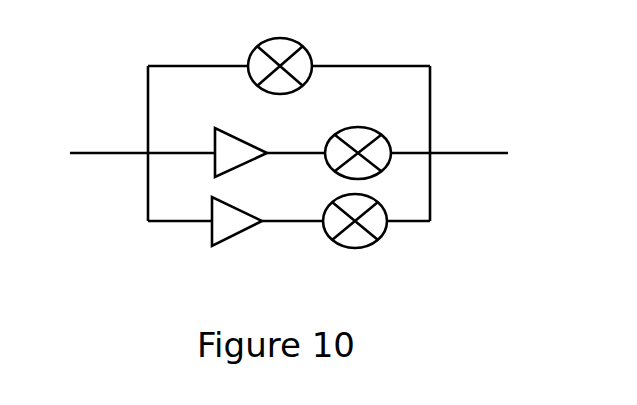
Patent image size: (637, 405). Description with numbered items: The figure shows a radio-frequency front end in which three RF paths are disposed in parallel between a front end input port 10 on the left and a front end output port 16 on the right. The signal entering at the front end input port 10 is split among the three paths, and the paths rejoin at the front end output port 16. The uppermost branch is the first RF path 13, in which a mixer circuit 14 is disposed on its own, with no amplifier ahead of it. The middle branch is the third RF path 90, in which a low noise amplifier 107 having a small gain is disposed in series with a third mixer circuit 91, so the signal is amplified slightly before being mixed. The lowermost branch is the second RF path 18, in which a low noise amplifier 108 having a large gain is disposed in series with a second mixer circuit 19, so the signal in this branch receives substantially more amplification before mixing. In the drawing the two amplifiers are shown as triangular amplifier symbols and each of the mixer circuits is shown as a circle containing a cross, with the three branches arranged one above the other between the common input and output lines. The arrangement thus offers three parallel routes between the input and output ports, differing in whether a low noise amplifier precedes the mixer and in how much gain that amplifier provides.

The front end input port 10 is at (95, 153).
The first RF path 13 is at (218, 65).
The mixer circuit 14 is at (317, 62).
The front end output port 16 is at (472, 152).
The second RF path 18 is at (175, 222).
The second mixer circuit 19 is at (386, 240).
The third RF path 90 is at (170, 153).
The third mixer circuit 91 is at (340, 128).
The low noise amplifier 107 is at (248, 143).
The low noise amplifier 108 is at (238, 233).